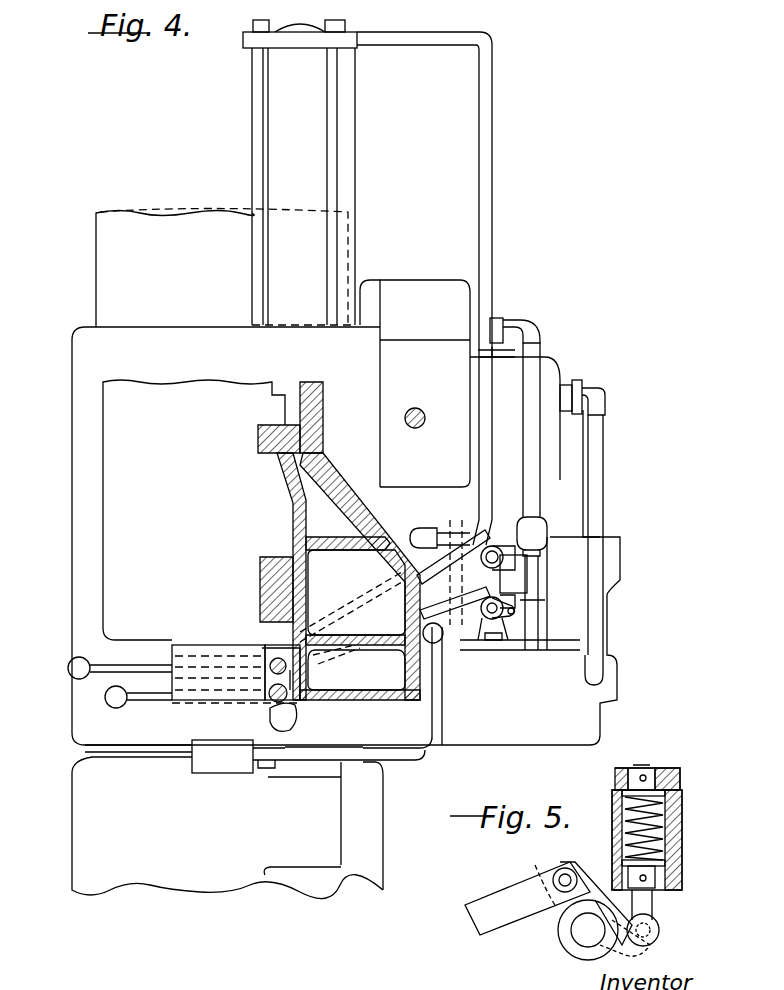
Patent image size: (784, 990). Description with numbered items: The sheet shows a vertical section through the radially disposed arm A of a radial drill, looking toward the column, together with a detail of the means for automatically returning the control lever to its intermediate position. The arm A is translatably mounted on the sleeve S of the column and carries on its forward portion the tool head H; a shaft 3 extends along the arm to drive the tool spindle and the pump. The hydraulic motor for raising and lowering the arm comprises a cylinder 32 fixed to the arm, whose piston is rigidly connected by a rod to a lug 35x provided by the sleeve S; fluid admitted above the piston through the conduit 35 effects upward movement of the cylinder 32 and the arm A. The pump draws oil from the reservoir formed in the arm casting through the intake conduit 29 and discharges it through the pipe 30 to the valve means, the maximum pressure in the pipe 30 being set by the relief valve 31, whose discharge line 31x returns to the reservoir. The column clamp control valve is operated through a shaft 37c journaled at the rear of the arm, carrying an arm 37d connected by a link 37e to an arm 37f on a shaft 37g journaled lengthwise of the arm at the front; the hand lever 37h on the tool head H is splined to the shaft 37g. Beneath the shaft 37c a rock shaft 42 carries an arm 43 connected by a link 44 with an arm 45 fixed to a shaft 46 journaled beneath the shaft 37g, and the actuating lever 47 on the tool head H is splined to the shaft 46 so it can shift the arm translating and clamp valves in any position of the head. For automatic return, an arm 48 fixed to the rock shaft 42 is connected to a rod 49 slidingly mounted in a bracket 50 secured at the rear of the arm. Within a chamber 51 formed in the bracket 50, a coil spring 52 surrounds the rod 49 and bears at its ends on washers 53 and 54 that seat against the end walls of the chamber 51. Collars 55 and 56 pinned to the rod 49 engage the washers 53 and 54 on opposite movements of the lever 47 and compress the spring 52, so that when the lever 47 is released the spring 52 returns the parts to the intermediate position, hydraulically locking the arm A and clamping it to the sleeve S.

In FIG. 4, the shaft 3 is at (422, 395).
In FIG. 4, the intake conduit 29 is at (603, 488).
In FIG. 4, the pipe 30 is at (540, 350).
In FIG. 4, the relief valve 31 is at (540, 527).
In FIG. 4, the discharge line 31x is at (538, 640).
In FIG. 4, the cylinder 32 is at (357, 152).
In FIG. 4, the conduit 35 is at (492, 176).
In FIG. 4, the lug 35x is at (341, 830).
In FIG. 4, the shaft 37c is at (530, 582).
In FIG. 4, the arm 37d is at (493, 548).
In FIG. 4, the link 37e is at (368, 598).
In FIG. 4, the arm 37f is at (282, 648).
In FIG. 4, the shaft 37g is at (349, 674).
In FIG. 4, the hand lever 37h is at (100, 668).
In FIG. 4, the rock shaft 42 is at (508, 628).
In FIG. 5, the rock shaft 42 is at (585, 935).
In FIG. 4, the arm 43 is at (482, 633).
In FIG. 5, the arm 43 is at (540, 925).
In FIG. 4, the link 44 is at (370, 625).
In FIG. 5, the link 44 is at (510, 893).
In FIG. 4, the arm 45 is at (305, 703).
In FIG. 4, the shaft 46 is at (282, 705).
In FIG. 4, the actuating lever 47 is at (158, 705).
In FIG. 4, the arm 48 is at (520, 624).
In FIG. 5, the arm 48 is at (640, 950).
In FIG. 4, the rod 49 is at (520, 603).
In FIG. 5, the rod 49 is at (648, 905).
In FIG. 4, the bracket 50 is at (528, 566).
In FIG. 5, the bracket 50 is at (682, 820).
In FIG. 5, the chamber 51 is at (665, 798).
In FIG. 5, the coil spring 52 is at (665, 843).
In FIG. 5, the washer 53 is at (660, 790).
In FIG. 5, the washer 54 is at (665, 864).
In FIG. 5, the collar 55 is at (652, 772).
In FIG. 5, the collar 56 is at (660, 882).
In FIG. 4, the sleeve S is at (96, 270).
In FIG. 4, the housing G is at (72, 500).
In FIG. 4, the tool head H is at (194, 510).
In FIG. 4, the arm A is at (292, 508).